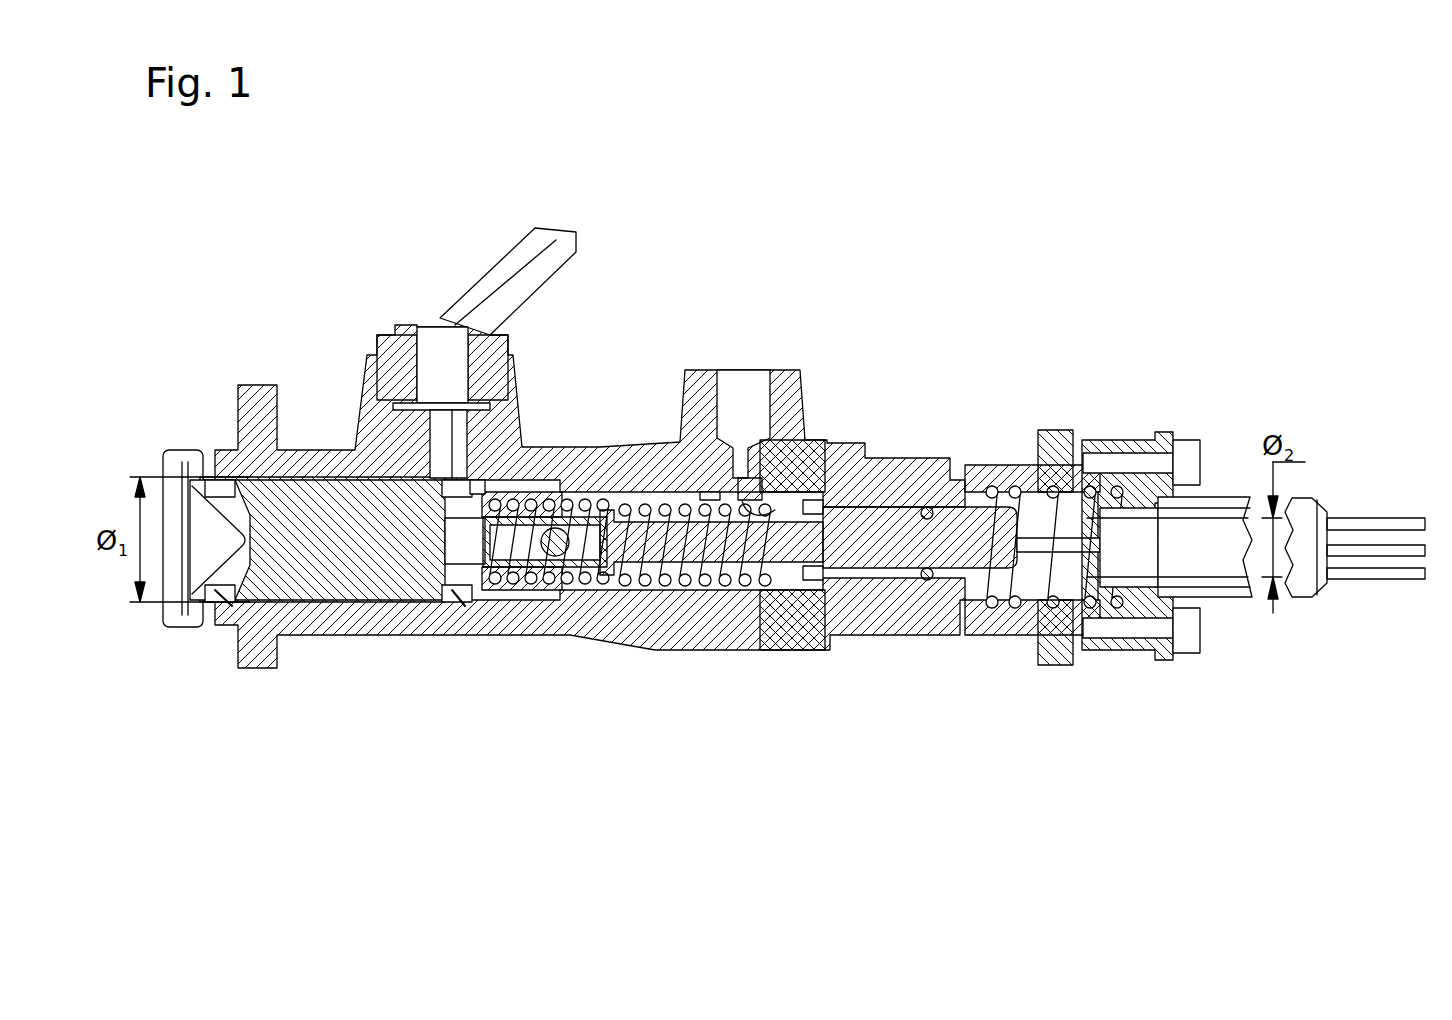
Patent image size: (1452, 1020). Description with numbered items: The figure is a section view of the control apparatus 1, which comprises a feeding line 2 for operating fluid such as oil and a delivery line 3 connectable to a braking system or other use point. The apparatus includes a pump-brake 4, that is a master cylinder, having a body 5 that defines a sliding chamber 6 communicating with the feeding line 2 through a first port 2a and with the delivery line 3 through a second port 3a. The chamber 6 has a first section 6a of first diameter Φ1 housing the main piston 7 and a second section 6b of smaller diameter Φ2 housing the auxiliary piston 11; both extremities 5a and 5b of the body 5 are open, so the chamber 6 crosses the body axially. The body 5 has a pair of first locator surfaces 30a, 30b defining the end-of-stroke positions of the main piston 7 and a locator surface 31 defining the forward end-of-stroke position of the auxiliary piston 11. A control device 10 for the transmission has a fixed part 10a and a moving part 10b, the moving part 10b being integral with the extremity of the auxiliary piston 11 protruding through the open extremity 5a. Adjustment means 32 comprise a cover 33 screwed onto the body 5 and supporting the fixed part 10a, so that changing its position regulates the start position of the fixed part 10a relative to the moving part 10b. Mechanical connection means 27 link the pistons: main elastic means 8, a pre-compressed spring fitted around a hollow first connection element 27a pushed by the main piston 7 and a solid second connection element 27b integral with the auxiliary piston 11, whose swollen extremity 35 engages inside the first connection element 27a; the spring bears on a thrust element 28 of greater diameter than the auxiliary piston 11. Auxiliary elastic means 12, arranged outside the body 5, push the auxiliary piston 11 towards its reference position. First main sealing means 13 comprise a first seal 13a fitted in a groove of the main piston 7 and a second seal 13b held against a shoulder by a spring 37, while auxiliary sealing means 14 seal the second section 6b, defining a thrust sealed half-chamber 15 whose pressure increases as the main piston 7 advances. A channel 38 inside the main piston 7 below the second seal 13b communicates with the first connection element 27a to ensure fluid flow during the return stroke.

The apparatus 1 is at (1142, 195).
The feeding line 2 is at (487, 290).
The first port 2a is at (470, 480).
The delivery line 3 is at (740, 400).
The second port 3a is at (748, 490).
The pump-brake 4 is at (660, 665).
The body 5 is at (747, 632).
The open extremity 5a is at (940, 612).
The extremity 5b is at (205, 462).
The sliding chamber 6 is at (582, 490).
The first section 6a is at (538, 488).
The second section 6b is at (927, 505).
The main piston 7 is at (280, 590).
The main elastic means 8 is at (685, 485).
The control device 10 is at (1235, 605).
The fixed part 10a is at (1128, 560).
The moving part 10b is at (1062, 560).
The auxiliary piston 11 is at (862, 572).
The auxiliary elastic means 12 is at (1010, 568).
The first main sealing means 13 is at (228, 600).
The first seal 13a is at (220, 606).
The second seal 13b is at (458, 610).
The auxiliary sealing means 14 is at (903, 582).
The thrust sealed half-chamber 15 is at (608, 578).
The mechanical connection means 27 is at (628, 500).
The first connection element 27a is at (520, 572).
The second connection element 27b is at (698, 575).
The thrust element 28 is at (808, 580).
The first locator surface 30a is at (192, 605).
The first locator surface 30b is at (762, 510).
The locator surface 31 is at (876, 505).
The adjustment means 32 is at (1118, 435).
The cover 33 is at (1057, 435).
The extremity 35 is at (585, 570).
The spring 37 is at (478, 490).
The channel 38 is at (445, 565).